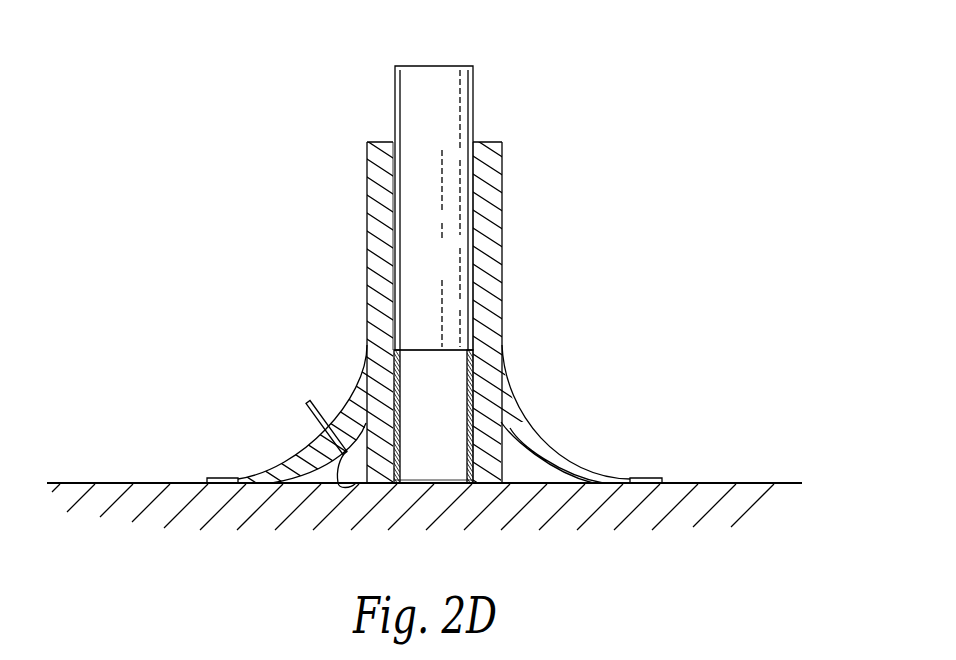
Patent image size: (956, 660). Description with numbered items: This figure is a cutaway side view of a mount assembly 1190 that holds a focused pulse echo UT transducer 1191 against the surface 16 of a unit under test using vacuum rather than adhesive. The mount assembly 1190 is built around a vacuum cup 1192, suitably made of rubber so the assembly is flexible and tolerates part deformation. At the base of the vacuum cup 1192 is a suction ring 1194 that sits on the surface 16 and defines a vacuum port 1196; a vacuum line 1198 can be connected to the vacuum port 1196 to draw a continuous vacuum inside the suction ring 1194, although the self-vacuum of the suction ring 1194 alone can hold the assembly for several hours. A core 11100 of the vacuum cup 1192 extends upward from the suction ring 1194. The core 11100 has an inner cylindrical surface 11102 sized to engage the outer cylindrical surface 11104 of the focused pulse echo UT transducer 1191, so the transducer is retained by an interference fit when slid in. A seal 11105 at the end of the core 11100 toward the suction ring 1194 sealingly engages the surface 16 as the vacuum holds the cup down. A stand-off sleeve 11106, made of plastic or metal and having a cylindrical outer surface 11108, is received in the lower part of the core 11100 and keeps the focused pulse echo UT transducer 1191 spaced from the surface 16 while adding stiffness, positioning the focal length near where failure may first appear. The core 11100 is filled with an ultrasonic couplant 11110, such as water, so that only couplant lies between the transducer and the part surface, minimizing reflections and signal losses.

The surface 16 is at (747, 483).
The mount assembly 1190 is at (465, 330).
The focused pulse echo UT transducer 1191 is at (487, 103).
The vacuum cup 1192 is at (338, 265).
The suction ring 1194 is at (316, 486).
The vacuum port 1196 is at (340, 489).
The vacuum line 1198 is at (308, 412).
The core 11100 is at (432, 330).
The inner cylindrical surface 11102 is at (393, 223).
The outer cylindrical surface 11104 is at (423, 102).
The seal 11105 is at (477, 488).
The stand-off sleeve 11106 is at (478, 417).
The cylindrical outer surface 11108 is at (475, 362).
The ultrasonic couplant 11110 is at (423, 407).